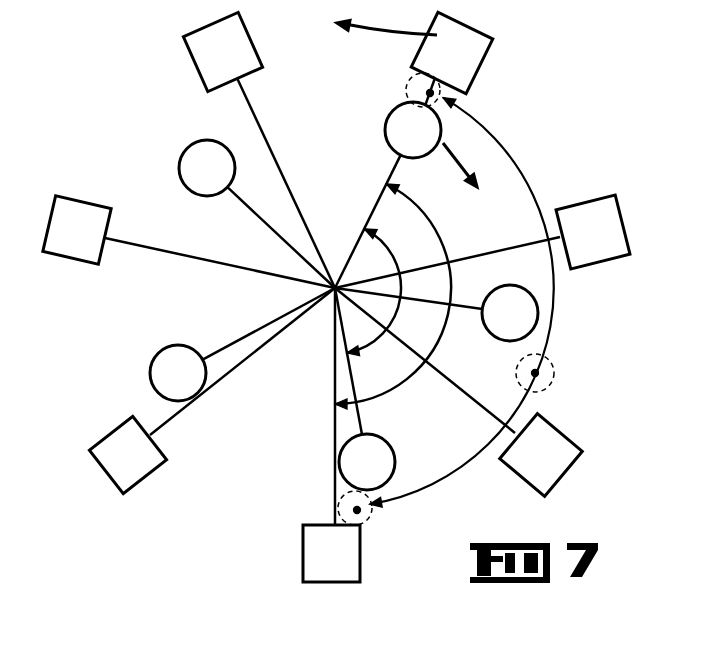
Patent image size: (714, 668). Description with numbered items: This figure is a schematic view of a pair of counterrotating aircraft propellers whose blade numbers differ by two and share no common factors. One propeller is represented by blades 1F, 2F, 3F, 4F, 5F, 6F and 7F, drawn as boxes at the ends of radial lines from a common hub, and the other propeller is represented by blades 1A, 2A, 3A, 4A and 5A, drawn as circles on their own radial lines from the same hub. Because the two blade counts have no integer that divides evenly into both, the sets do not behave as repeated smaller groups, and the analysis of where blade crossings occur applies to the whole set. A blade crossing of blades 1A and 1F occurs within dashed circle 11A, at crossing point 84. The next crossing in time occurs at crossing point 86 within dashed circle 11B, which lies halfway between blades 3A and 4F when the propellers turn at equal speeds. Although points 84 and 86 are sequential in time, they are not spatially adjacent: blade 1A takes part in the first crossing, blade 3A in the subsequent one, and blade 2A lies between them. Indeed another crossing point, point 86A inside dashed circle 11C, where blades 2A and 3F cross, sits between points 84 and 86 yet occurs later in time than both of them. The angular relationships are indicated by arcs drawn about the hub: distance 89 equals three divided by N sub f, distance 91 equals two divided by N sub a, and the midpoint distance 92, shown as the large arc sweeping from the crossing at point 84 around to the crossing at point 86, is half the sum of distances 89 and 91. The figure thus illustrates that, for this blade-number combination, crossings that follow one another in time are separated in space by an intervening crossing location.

The blade 1F is at (452, 53).
The blade 2F is at (593, 232).
The blade 3F is at (541, 455).
The blade 4F is at (331, 553).
The blade 5F is at (127, 454).
The blade 6F is at (77, 230).
The blade 7F is at (222, 51).
The blade 1A is at (413, 130).
The blade 2A is at (510, 313).
The blade 3A is at (367, 462).
The blade 4A is at (178, 373).
The blade 5A is at (207, 168).
The dashed circle 11A is at (418, 82).
The dashed circle 11B is at (372, 518).
The dashed circle 11C is at (552, 388).
The crossing point 84 is at (427, 92).
The crossing point 86 is at (352, 509).
The crossing point 86A is at (538, 372).
The distance 89 is at (436, 222).
The distance 91 is at (374, 345).
The midpoint distance 92 is at (514, 157).